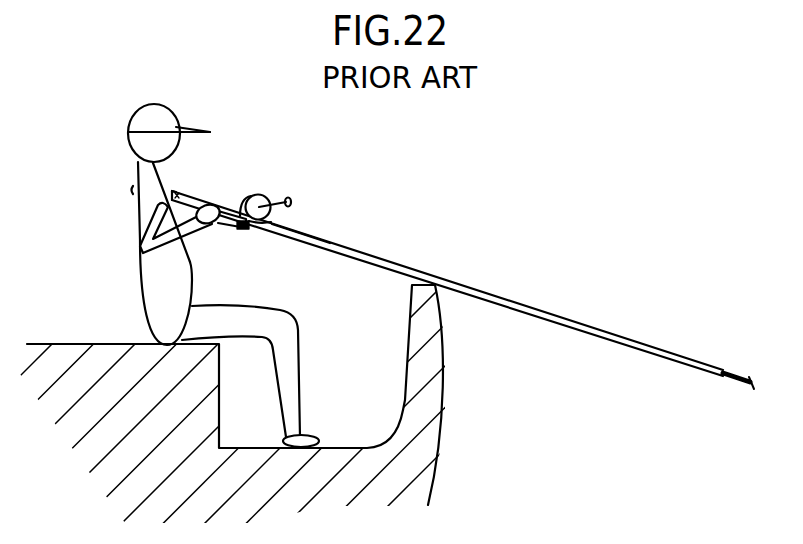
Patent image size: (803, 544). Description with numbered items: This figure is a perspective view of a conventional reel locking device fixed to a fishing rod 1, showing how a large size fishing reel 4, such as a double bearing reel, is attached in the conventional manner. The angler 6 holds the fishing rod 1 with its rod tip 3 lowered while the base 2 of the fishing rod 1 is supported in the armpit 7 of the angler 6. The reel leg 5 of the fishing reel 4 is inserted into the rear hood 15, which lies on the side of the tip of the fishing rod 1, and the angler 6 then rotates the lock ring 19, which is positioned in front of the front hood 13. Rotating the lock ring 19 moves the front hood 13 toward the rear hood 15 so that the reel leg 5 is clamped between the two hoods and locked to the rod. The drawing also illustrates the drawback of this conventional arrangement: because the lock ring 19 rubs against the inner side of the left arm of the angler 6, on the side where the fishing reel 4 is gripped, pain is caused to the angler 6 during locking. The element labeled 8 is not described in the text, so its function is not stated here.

The fishing rod 1 is at (538, 299).
The base 2 is at (206, 198).
The rod tip 3 is at (728, 369).
The fishing reel 4 is at (272, 197).
The reel leg 5 is at (266, 229).
The angler 6 is at (145, 277).
The armpit 7 is at (181, 184).
The reel foot 8 is at (236, 195).
The front hood 13 is at (243, 231).
The rear hood 15 is at (279, 219).
The lock ring 19 is at (219, 224).